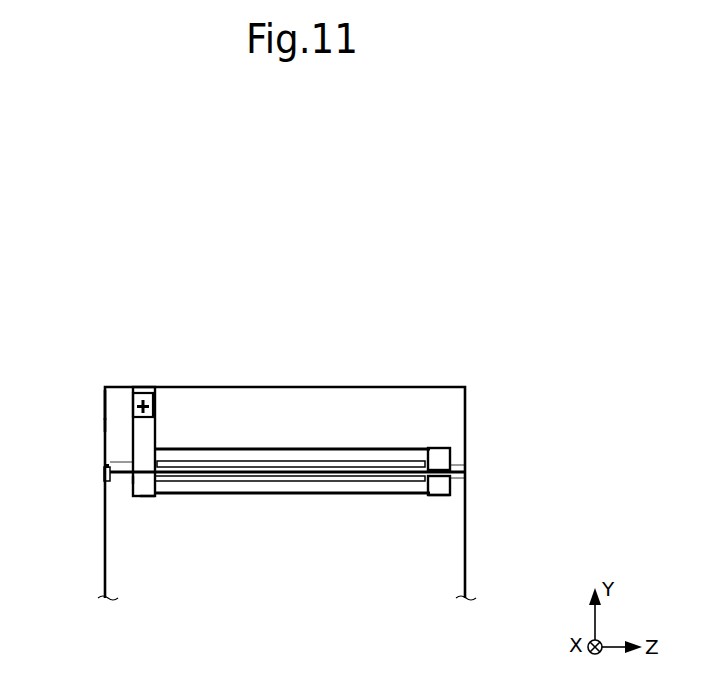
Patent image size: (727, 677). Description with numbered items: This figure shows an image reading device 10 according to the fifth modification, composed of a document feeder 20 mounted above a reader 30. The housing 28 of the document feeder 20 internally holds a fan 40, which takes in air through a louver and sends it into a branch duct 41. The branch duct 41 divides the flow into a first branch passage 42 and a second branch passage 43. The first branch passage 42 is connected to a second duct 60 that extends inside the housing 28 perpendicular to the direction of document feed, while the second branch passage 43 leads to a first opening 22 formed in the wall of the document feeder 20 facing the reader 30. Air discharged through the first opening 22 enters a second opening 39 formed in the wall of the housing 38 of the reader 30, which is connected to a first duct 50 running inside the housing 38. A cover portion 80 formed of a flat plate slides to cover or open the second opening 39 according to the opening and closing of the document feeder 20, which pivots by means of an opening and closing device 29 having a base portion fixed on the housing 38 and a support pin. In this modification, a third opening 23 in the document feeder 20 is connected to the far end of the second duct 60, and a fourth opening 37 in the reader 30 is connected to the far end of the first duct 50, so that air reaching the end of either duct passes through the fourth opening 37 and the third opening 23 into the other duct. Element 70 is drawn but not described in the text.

The image reading device 10 is at (531, 325).
The document feeder 20 is at (473, 381).
The first opening 22 is at (106, 405).
The third opening 23 is at (442, 468).
The housing 28 is at (105, 423).
The opening and closing device 29 is at (105, 472).
The reader 30 is at (556, 527).
The fourth opening 37 is at (445, 478).
The housing 38 is at (105, 484).
The second opening 39 is at (150, 495).
The fan 40 is at (156, 393).
The branch duct 41 is at (158, 420).
The first branch passage 42 is at (162, 447).
The second branch passage 43 is at (126, 462).
The first duct 50 is at (435, 500).
The second duct 60 is at (373, 448).
The plate 70 is at (367, 467).
The cover portion 80 is at (132, 480).